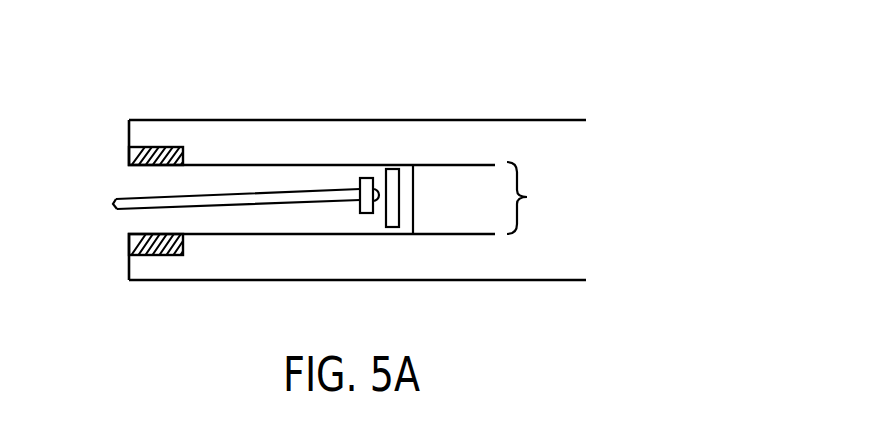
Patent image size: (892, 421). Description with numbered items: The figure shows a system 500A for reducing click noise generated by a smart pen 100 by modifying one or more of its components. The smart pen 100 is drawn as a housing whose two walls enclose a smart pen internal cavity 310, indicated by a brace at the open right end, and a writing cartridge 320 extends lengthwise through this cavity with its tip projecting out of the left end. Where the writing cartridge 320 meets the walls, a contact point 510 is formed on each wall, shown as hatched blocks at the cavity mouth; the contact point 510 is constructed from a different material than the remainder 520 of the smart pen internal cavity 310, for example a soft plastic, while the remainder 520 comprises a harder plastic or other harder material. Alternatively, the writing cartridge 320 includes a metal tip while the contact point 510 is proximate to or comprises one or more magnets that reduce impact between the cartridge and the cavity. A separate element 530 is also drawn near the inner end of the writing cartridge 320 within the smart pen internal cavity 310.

The system 500A is at (352, 57).
The smart pen 100 is at (430, 118).
The remainder of the smart pen internal cavity 520 is at (285, 143).
The contact point 510 is at (128, 155).
The writing cartridge 320 is at (115, 204).
The stop plate 530 is at (392, 228).
The smart pen internal cavity 310 is at (494, 198).